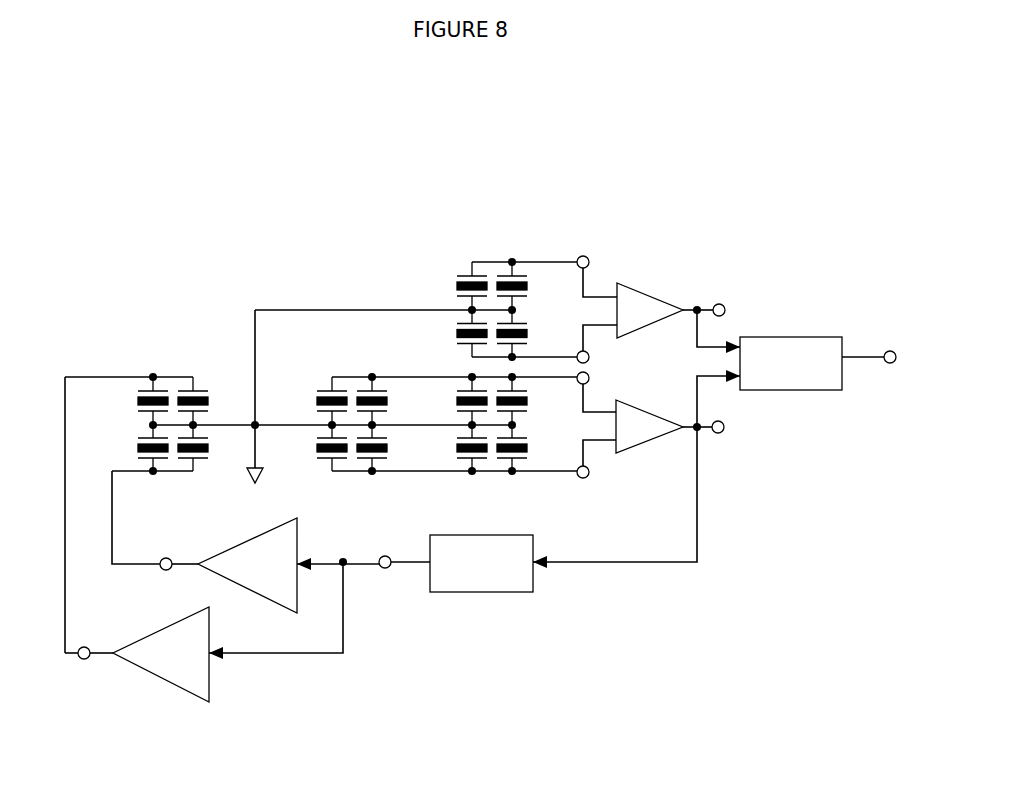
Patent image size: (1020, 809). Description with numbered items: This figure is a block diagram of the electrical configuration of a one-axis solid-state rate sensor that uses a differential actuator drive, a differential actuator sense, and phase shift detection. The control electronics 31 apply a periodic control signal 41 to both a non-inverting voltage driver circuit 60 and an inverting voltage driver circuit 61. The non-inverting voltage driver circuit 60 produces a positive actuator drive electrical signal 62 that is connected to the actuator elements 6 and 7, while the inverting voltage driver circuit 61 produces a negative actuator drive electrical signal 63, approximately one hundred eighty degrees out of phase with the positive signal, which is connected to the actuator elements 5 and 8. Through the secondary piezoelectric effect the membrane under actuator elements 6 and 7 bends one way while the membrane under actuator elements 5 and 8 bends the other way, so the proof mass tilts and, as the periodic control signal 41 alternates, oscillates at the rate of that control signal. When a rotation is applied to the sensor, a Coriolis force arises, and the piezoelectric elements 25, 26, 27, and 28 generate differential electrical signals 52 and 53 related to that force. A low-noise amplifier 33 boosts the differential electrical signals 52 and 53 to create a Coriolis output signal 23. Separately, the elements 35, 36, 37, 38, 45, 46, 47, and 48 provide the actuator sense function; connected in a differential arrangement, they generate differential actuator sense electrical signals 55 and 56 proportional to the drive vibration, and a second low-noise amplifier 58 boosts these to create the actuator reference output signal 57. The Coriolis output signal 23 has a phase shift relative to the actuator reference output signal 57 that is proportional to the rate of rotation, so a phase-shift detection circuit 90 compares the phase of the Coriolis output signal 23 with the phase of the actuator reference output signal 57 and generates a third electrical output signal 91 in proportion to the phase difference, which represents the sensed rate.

The actuator element 5 is at (138, 403).
The actuator element 6 is at (138, 448).
The actuator element 7 is at (208, 447).
The actuator element 8 is at (208, 400).
The piezoelectric element 25 is at (457, 285).
The piezoelectric element 26 is at (457, 333).
The piezoelectric element 27 is at (528, 333).
The piezoelectric element 28 is at (528, 285).
The actuator sense element 35 is at (315, 400).
The actuator sense element 36 is at (315, 448).
The actuator sense element 37 is at (457, 447).
The actuator sense element 38 is at (457, 399).
The actuator sense element 45 is at (388, 447).
The actuator sense element 46 is at (388, 402).
The actuator sense element 47 is at (530, 400).
The actuator sense element 48 is at (530, 447).
The differential electrical signal 52 is at (588, 258).
The differential electrical signal 53 is at (589, 355).
The differential actuator sense electrical signal 55 is at (589, 376).
The differential actuator sense electrical signal 56 is at (588, 475).
The low-noise amplifier 33 is at (638, 293).
The low-noise amplifier 58 is at (632, 413).
The Coriolis output signal 23 is at (723, 305).
The actuator reference output signal 57 is at (722, 432).
The phase-shift detection circuit 90 is at (810, 390).
The third electrical output signal 91 is at (886, 350).
The control electronics 31 is at (473, 592).
The periodic control signal 41 is at (383, 568).
The non-inverting voltage driver circuit 60 is at (270, 540).
The inverting voltage driver circuit 61 is at (178, 673).
The positive actuator drive electrical signal 62 is at (168, 558).
The negative actuator drive electrical signal 63 is at (87, 647).